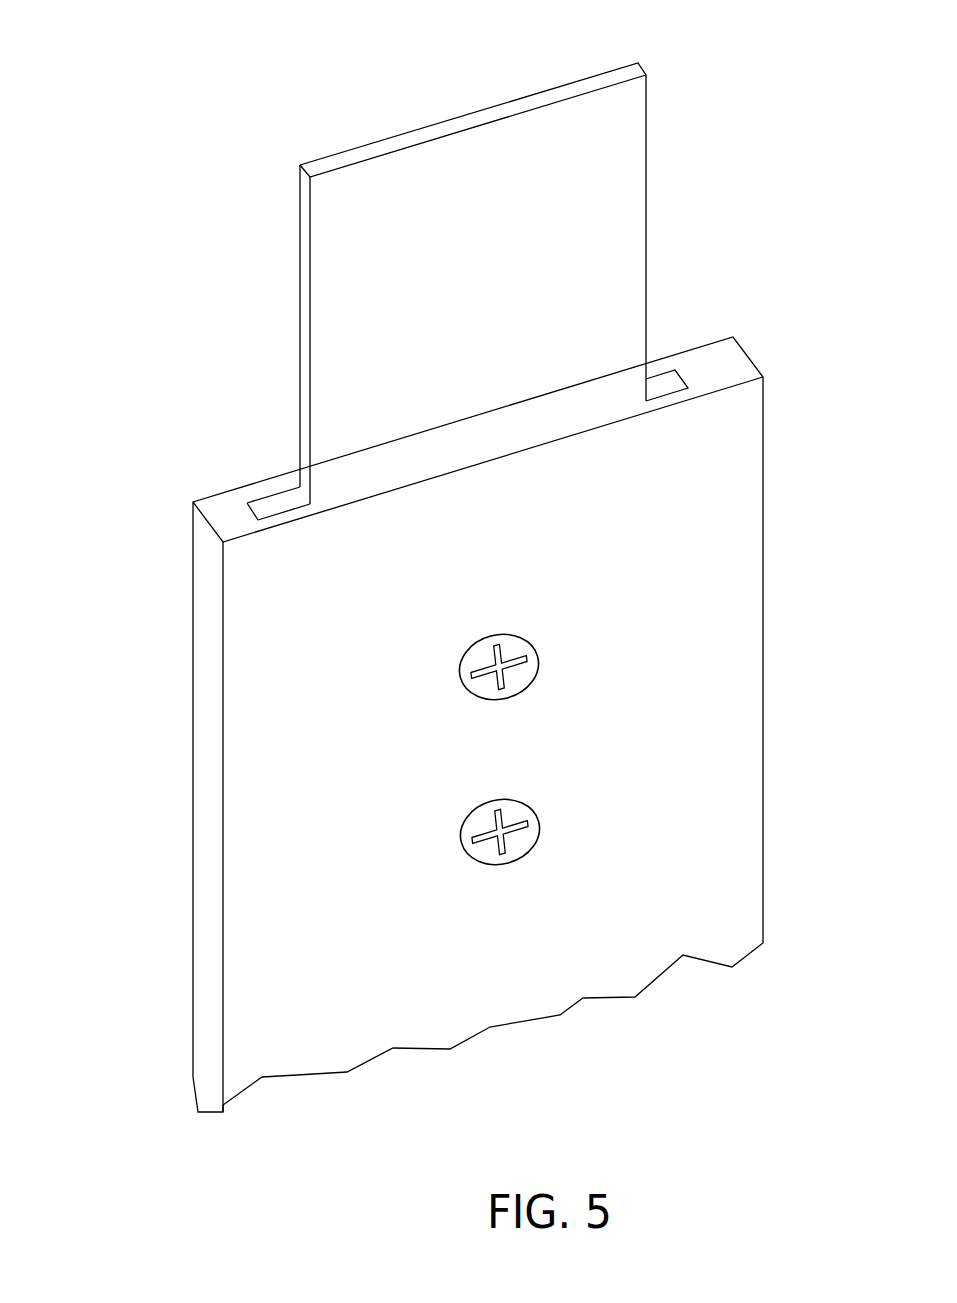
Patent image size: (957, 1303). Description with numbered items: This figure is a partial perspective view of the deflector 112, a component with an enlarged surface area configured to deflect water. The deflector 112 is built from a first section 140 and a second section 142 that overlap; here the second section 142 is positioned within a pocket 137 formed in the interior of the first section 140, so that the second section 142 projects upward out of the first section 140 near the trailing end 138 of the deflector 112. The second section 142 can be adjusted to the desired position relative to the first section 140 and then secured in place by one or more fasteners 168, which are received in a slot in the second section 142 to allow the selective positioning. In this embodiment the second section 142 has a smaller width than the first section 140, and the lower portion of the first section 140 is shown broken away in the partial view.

The deflector 112 is at (124, 838).
The pocket 137 is at (278, 503).
The trailing end 138 is at (372, 143).
The first section 140 is at (740, 553).
The second section 142 is at (570, 125).
The fasteners 168 is at (463, 690).